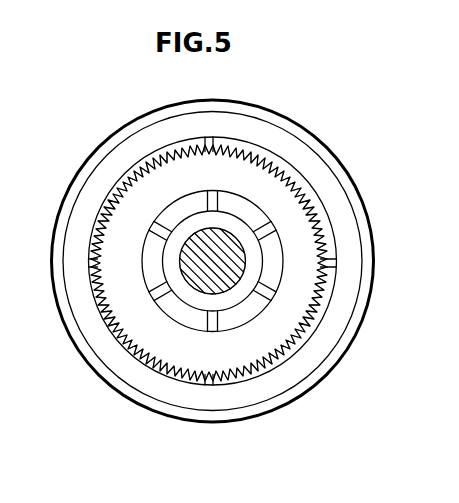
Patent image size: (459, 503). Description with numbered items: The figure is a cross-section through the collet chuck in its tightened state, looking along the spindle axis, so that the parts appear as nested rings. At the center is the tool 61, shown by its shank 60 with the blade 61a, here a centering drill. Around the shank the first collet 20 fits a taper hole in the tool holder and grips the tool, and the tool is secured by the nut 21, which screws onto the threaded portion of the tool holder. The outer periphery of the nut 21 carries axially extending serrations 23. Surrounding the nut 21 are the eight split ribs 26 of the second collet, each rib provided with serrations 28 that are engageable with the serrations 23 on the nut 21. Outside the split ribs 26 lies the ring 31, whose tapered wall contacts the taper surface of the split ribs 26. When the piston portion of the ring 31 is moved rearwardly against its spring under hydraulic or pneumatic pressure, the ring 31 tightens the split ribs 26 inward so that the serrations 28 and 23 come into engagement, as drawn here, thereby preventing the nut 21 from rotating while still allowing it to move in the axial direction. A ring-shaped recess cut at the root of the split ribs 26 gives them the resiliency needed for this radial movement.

The first collet 20 is at (283, 165).
The nut 21 is at (305, 237).
The serrations 23 is at (312, 302).
The split ribs 26 is at (162, 158).
The serrations 28 is at (94, 278).
The ring 31 is at (255, 133).
The shank 60 is at (194, 222).
The tool 61 is at (248, 269).
The blade 61a is at (183, 252).